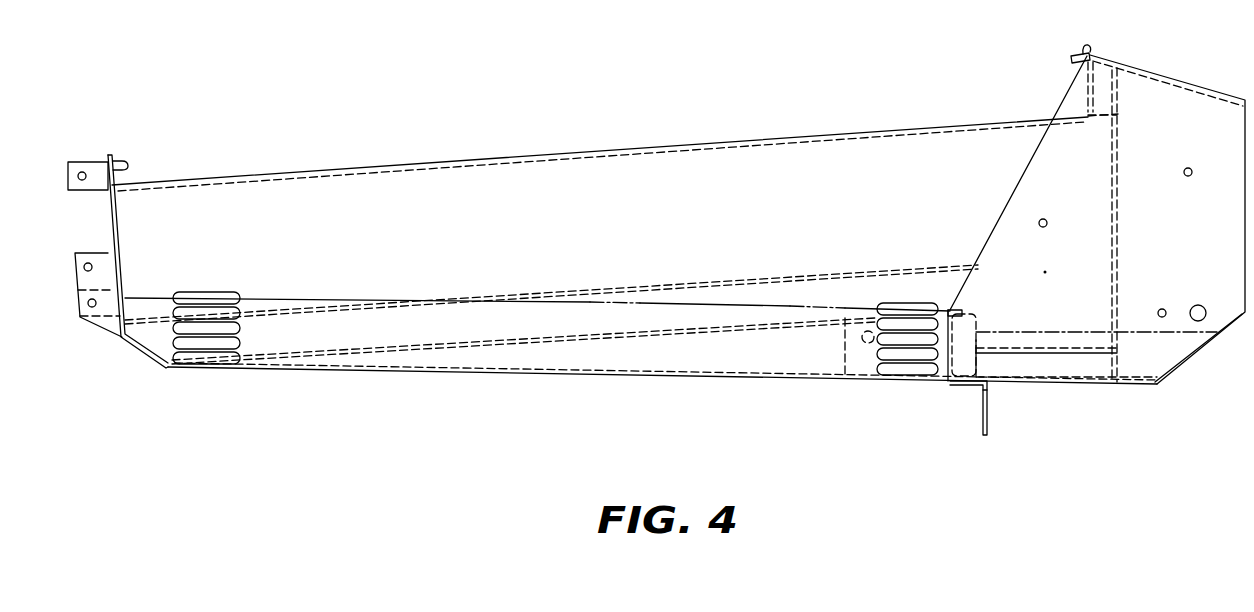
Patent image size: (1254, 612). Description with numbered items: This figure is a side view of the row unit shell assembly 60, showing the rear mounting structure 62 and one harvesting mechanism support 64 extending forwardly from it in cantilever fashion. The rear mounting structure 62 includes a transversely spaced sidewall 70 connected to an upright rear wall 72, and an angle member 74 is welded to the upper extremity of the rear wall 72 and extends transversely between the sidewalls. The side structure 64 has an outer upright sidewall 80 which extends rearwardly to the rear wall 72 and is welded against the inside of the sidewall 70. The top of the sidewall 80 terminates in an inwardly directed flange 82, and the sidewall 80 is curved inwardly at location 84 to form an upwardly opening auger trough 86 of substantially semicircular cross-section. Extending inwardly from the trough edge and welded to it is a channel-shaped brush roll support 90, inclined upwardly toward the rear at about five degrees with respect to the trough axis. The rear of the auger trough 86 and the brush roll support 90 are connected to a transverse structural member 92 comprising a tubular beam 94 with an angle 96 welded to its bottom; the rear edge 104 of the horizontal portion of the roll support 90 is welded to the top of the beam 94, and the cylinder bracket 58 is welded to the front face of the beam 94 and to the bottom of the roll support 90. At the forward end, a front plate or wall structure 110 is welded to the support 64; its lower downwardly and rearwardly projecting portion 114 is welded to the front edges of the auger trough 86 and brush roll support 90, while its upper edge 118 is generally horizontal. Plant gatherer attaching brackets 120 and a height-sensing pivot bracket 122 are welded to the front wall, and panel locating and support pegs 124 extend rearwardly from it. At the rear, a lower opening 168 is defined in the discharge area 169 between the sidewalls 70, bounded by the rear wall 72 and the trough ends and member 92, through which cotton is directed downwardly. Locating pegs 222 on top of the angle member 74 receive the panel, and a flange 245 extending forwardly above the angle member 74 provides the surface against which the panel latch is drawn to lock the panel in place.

The cylinder bracket 58 is at (863, 372).
The shell assembly 60 is at (599, 405).
The rear mounting structure 62 is at (1137, 400).
The left-hand side structure 64 is at (537, 158).
The sidewall 70 is at (1088, 185).
The rear wall 72 is at (1122, 226).
The angle member 74 is at (1090, 98).
The outer upright sidewall 80 is at (661, 217).
The inwardly directed flange 82 is at (347, 172).
The curved location 84 is at (280, 299).
The auger trough 86 is at (753, 372).
The brush roll support 90 is at (887, 262).
The transverse structural member 92 is at (966, 394).
The tubular beam 94 is at (980, 322).
The angle 96 is at (988, 413).
The rear edge 104 is at (962, 306).
The front plate 110 is at (112, 209).
The lower downwardly and rearwardly projecting portion 114 is at (153, 359).
The upper edge 118 is at (110, 155).
The plant gatherer attaching bracket 120 is at (108, 252).
The height-sensing pivot bracket 122 is at (82, 163).
The panel locating and support peg 124 is at (124, 163).
The lower opening 168 is at (1057, 396).
The discharge area 169 is at (1076, 269).
The locating peg 222 is at (1084, 50).
The flange 245 is at (1072, 60).